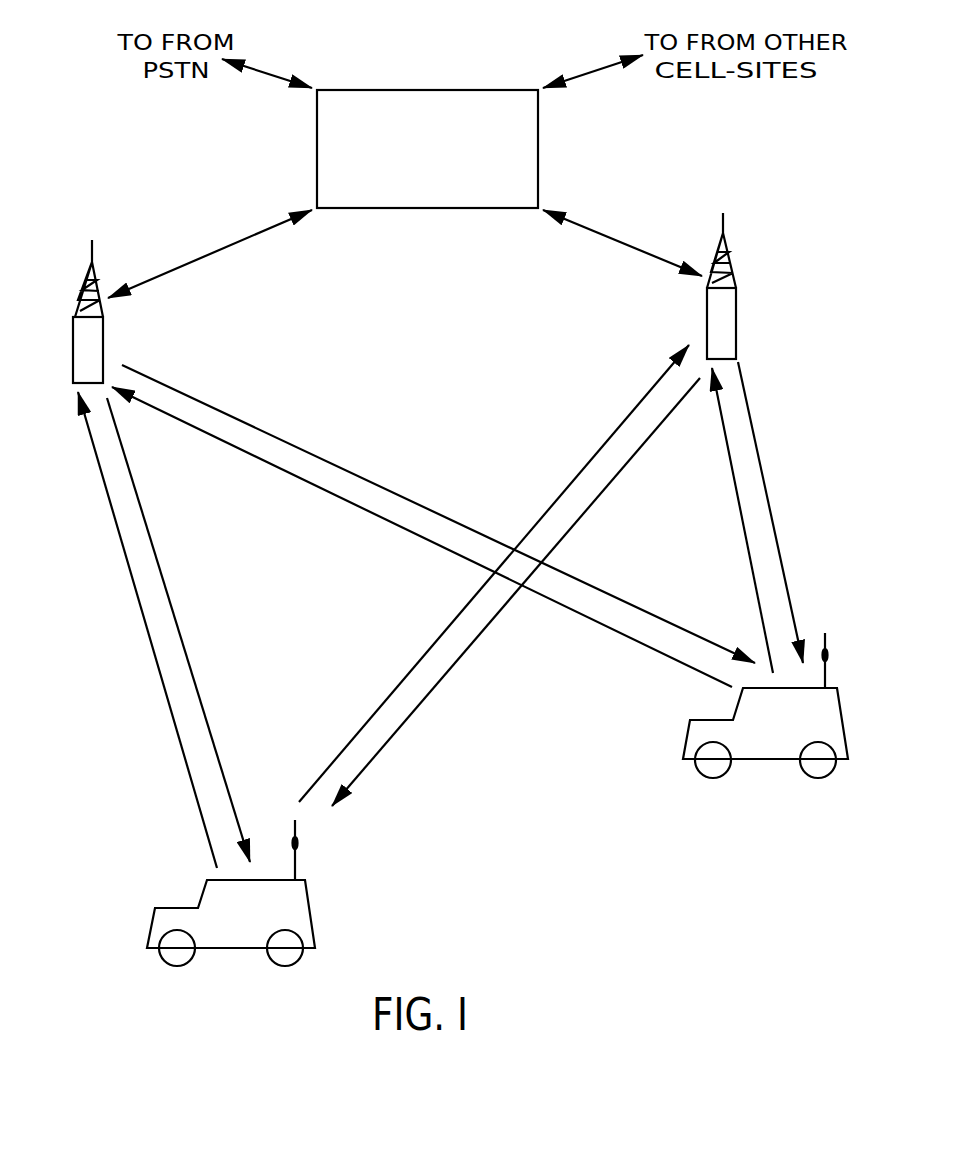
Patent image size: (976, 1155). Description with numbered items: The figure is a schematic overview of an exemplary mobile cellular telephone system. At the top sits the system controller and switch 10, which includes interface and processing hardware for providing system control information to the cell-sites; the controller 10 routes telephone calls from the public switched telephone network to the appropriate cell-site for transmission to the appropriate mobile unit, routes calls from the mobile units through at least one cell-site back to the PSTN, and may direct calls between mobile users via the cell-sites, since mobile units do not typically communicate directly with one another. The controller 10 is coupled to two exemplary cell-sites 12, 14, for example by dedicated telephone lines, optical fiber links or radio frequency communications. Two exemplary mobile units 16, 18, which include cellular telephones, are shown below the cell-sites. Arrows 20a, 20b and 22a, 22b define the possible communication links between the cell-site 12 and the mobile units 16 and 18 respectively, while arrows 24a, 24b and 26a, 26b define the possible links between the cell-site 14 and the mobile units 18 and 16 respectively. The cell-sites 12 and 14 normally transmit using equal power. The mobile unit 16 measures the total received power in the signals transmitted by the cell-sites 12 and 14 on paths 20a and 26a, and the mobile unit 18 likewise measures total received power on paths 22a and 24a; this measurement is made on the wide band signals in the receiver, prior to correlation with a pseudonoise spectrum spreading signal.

The system controller and switch 10 is at (420, 84).
The cell-site 12 is at (73, 348).
The cell-site 14 is at (736, 312).
The mobile unit 16 is at (315, 918).
The mobile unit 18 is at (683, 730).
The arrow 20a is at (183, 635).
The arrow 20b is at (168, 710).
The arrow 22a is at (308, 452).
The arrow 22b is at (322, 490).
The arrow 24a is at (760, 447).
The arrow 24b is at (744, 547).
The arrow 26a is at (453, 668).
The arrow 26b is at (390, 692).